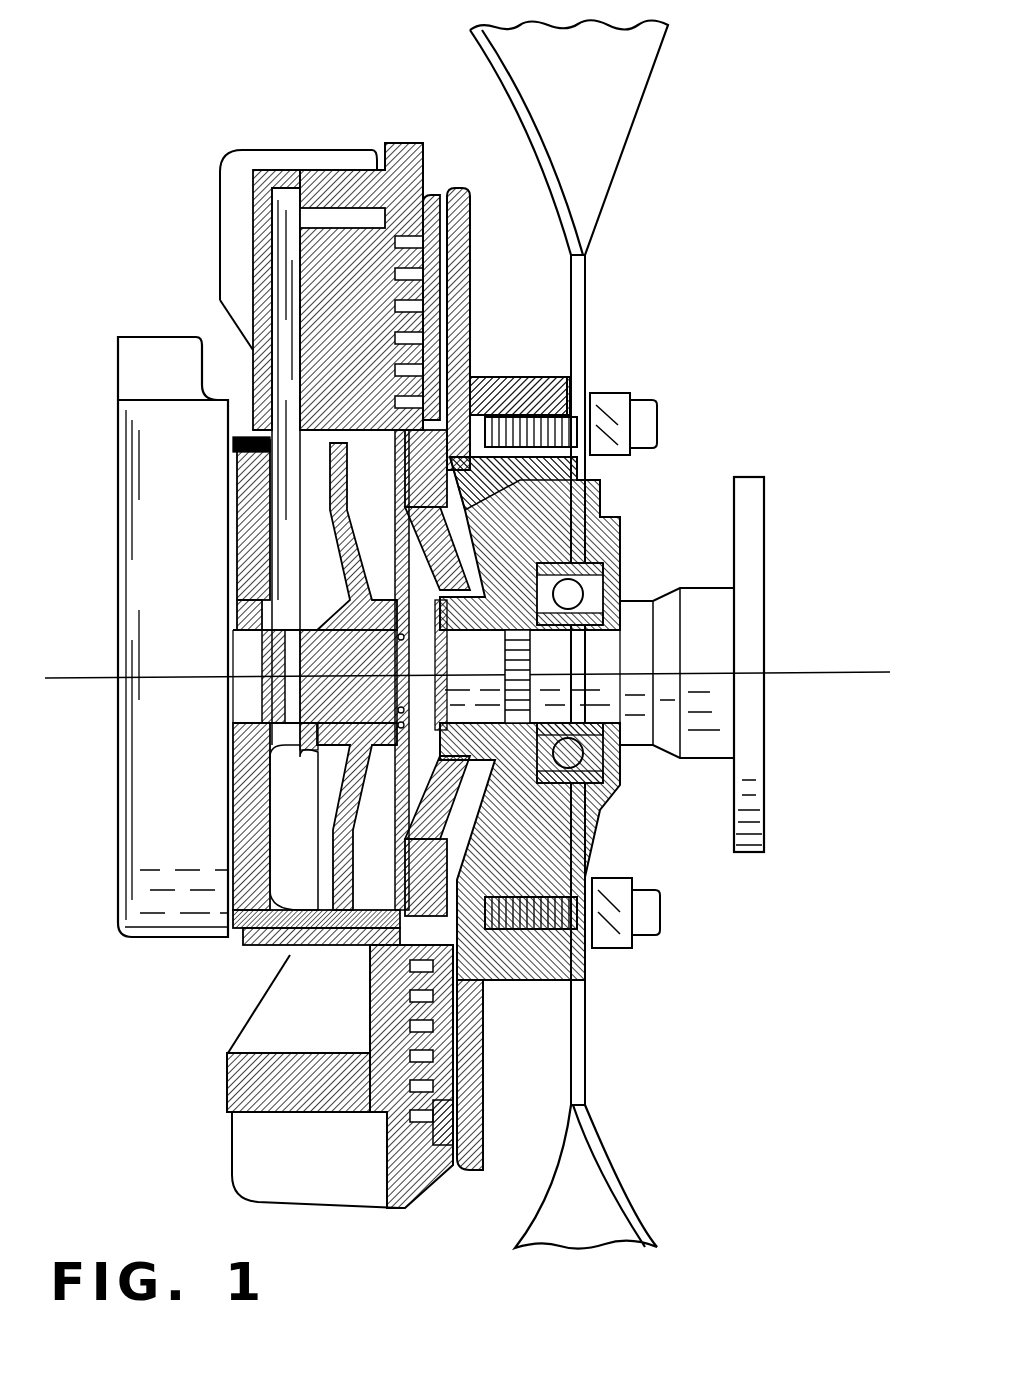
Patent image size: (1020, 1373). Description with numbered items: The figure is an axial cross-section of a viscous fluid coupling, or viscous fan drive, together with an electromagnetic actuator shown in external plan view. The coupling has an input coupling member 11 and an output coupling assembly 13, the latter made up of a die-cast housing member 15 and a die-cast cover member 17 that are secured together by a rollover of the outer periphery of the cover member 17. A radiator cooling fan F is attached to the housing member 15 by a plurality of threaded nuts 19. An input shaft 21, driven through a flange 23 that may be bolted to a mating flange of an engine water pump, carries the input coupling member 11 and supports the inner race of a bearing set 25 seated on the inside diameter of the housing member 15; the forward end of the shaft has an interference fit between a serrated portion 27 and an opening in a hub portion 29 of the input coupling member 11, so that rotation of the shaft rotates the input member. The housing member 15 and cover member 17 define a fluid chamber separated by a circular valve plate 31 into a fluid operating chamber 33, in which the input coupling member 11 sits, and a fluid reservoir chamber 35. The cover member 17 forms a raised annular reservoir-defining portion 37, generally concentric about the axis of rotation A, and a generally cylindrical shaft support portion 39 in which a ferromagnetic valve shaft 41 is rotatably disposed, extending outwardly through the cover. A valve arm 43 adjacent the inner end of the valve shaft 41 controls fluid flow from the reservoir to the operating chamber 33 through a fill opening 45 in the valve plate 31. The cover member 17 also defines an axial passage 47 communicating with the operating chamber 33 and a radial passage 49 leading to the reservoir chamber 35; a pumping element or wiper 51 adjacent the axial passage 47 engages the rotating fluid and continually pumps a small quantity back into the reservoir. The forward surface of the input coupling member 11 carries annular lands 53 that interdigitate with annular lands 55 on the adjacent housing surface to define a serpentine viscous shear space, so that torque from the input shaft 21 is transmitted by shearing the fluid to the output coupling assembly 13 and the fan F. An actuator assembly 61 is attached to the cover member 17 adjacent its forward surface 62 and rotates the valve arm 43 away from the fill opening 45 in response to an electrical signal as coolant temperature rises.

The input coupling member 11 is at (494, 546).
The output coupling assembly 13 is at (478, 288).
The housing member 15 is at (520, 400).
The cover member 17 is at (226, 1080).
The threaded nuts 19 is at (615, 408).
The input shaft 21 is at (708, 612).
The flange 23 is at (757, 772).
The bearing set 25 is at (628, 752).
The serrated portion 27 is at (538, 662).
The hub portion 29 is at (510, 745).
The valve plate 31 is at (362, 947).
The fluid operating chamber 33 is at (487, 518).
The fluid reservoir chamber 35 is at (303, 827).
The reservoir-defining portion 37 is at (253, 855).
The shaft support portion 39 is at (325, 748).
The valve shaft 41 is at (243, 662).
The valve arm 43 is at (377, 512).
The fill opening 45 is at (398, 460).
The axial passage 47 is at (335, 215).
The radial passage 49 is at (278, 268).
The pumping element 51 is at (425, 208).
The annular lands 53 is at (412, 1008).
The annular lands 55 is at (440, 1120).
The actuator assembly 61 is at (95, 410).
The forward surface 62 is at (237, 478).
The axis of rotation A is at (97, 676).
The radiator cooling fan F is at (650, 68).